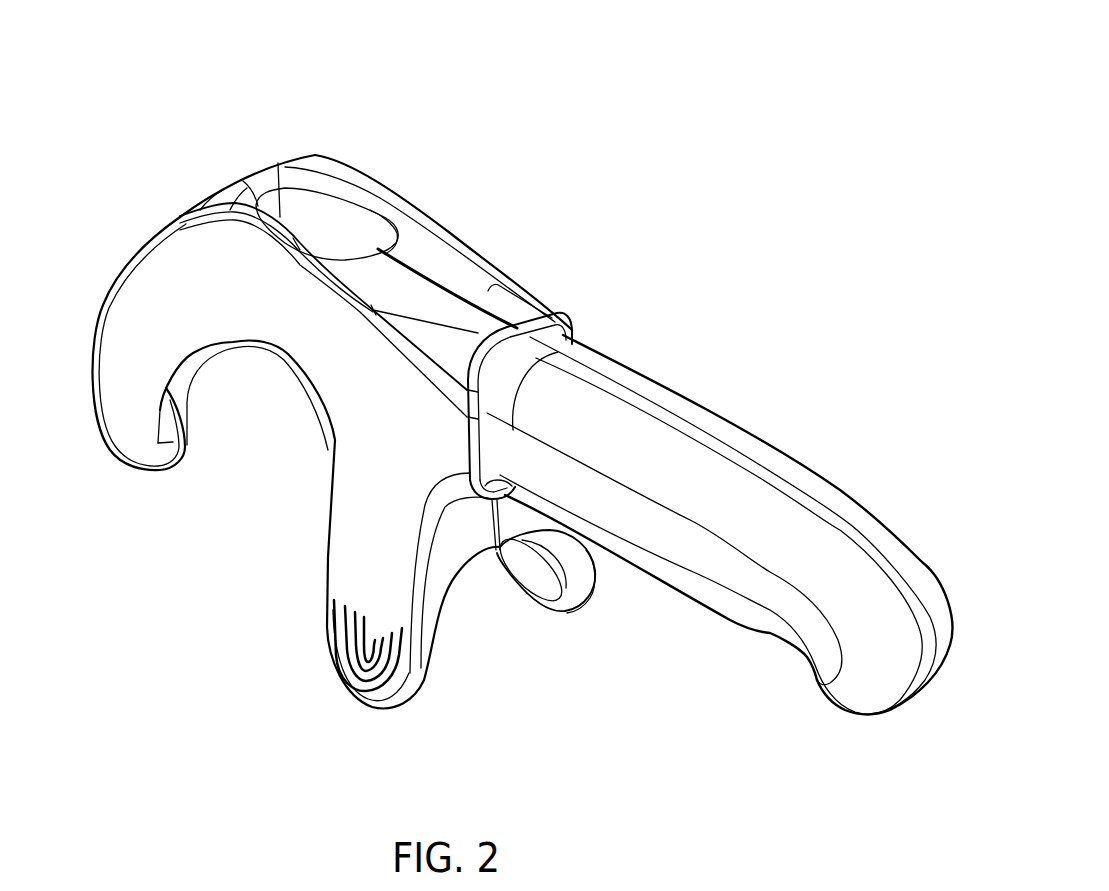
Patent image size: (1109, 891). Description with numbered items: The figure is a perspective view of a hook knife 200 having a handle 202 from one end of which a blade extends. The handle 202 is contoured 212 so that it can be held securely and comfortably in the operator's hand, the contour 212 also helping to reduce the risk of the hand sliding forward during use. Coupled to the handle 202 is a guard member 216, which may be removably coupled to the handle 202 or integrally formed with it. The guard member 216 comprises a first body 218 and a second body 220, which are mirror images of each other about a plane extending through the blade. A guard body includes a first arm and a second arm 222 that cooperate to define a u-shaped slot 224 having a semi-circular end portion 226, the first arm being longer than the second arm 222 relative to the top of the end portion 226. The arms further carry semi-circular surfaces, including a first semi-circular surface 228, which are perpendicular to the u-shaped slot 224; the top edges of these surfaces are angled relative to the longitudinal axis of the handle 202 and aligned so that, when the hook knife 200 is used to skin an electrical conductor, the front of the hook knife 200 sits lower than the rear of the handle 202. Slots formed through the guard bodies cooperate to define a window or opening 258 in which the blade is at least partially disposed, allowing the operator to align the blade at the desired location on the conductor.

The hook knife 200 is at (606, 85).
The handle 202 is at (780, 452).
The contour 212 is at (671, 590).
The guard member 216 is at (367, 130).
The first body 218 is at (438, 236).
The second body 220 is at (402, 710).
The second arm 222 is at (133, 445).
The u-shaped slot 224 is at (268, 544).
The semi-circular end portion 226 is at (268, 352).
The first semi-circular surface 228 is at (438, 632).
The opening 258 is at (291, 198).